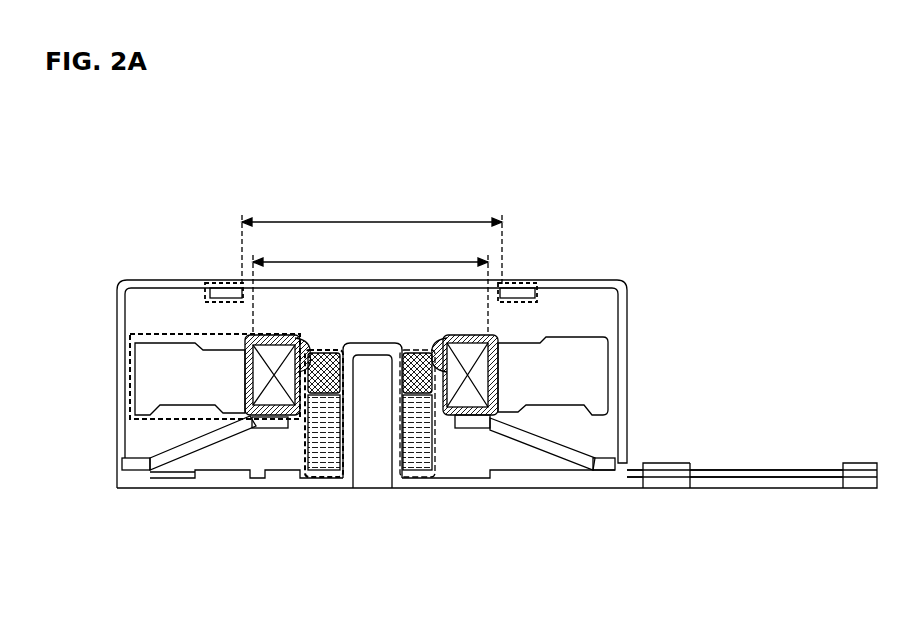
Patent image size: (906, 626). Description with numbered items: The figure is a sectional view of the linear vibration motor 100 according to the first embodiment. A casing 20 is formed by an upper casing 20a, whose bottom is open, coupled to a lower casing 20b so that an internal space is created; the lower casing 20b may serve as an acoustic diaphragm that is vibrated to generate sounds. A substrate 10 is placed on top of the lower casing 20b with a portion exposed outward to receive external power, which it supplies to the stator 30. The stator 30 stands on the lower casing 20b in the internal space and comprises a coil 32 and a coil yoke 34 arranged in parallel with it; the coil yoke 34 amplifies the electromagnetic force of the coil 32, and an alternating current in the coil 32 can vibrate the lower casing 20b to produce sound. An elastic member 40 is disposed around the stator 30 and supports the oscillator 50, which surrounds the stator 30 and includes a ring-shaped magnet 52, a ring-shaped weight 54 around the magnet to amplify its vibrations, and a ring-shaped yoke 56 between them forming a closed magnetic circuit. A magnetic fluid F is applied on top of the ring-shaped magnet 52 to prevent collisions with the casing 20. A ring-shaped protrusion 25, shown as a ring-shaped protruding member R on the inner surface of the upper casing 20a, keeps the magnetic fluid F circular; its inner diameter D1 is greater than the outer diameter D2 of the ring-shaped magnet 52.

The linear vibration motor 100 is at (498, 153).
The substrate 10 is at (538, 478).
The casing 20 is at (497, 384).
The upper casing 20a is at (628, 410).
The lower casing 20b is at (752, 456).
The ring-shaped protrusion 25 is at (206, 292).
The ring-shaped protruding member R is at (229, 291).
The inner diameter of the ring-shaped protrusion D1 is at (372, 241).
The outer diameter of the ring-shaped magnet D2 is at (370, 285).
The stator 30 is at (390, 460).
The coil 32 is at (414, 455).
The coil yoke 34 is at (427, 383).
The elastic member 40 is at (185, 440).
The oscillator 50 is at (392, 371).
The ring-shaped magnet 52 is at (482, 362).
The ring-shaped weight 54 is at (597, 387).
The ring-shaped yoke 56 is at (493, 378).
The magnetic fluid F is at (245, 336).